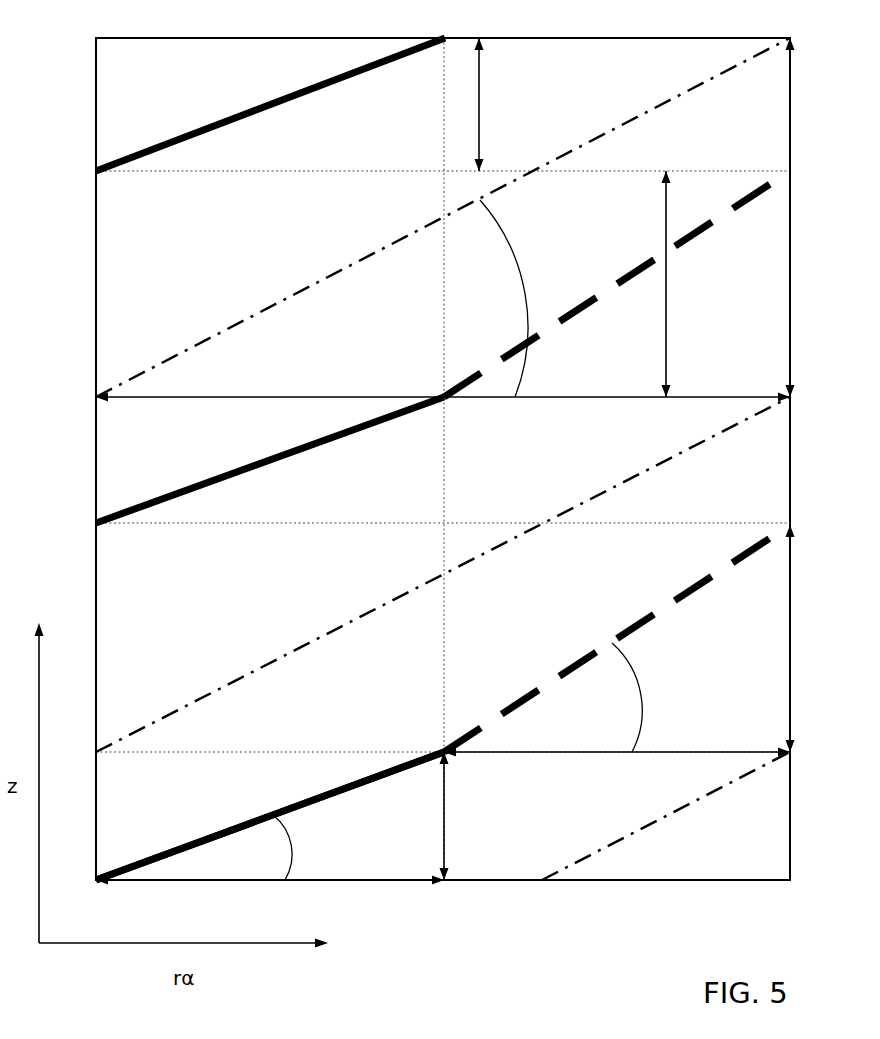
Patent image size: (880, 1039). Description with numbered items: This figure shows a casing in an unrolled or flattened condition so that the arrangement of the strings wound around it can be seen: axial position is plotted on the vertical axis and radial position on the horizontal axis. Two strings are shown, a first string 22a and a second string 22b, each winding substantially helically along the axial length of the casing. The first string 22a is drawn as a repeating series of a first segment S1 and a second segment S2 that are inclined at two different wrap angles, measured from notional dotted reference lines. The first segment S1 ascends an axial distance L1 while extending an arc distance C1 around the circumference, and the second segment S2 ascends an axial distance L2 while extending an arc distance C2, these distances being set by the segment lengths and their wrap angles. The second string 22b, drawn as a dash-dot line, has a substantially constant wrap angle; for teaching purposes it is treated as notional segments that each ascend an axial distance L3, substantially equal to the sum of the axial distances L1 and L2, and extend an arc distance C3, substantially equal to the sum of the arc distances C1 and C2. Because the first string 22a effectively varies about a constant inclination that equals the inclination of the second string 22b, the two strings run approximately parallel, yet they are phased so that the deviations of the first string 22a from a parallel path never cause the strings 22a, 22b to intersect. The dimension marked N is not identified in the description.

The first string 22a is at (276, 460).
The second string 22b is at (340, 271).
The first segment S1 is at (245, 822).
The second segment S2 is at (667, 606).
The first arc distance C1 is at (270, 892).
The second arc distance C2 is at (617, 765).
The third arc distance C3 is at (443, 408).
The first axial distance L1 is at (457, 816).
The second axial distance L2 is at (803, 638).
The third axial distance L3 is at (808, 217).
The pitch distance N is at (589, 217).